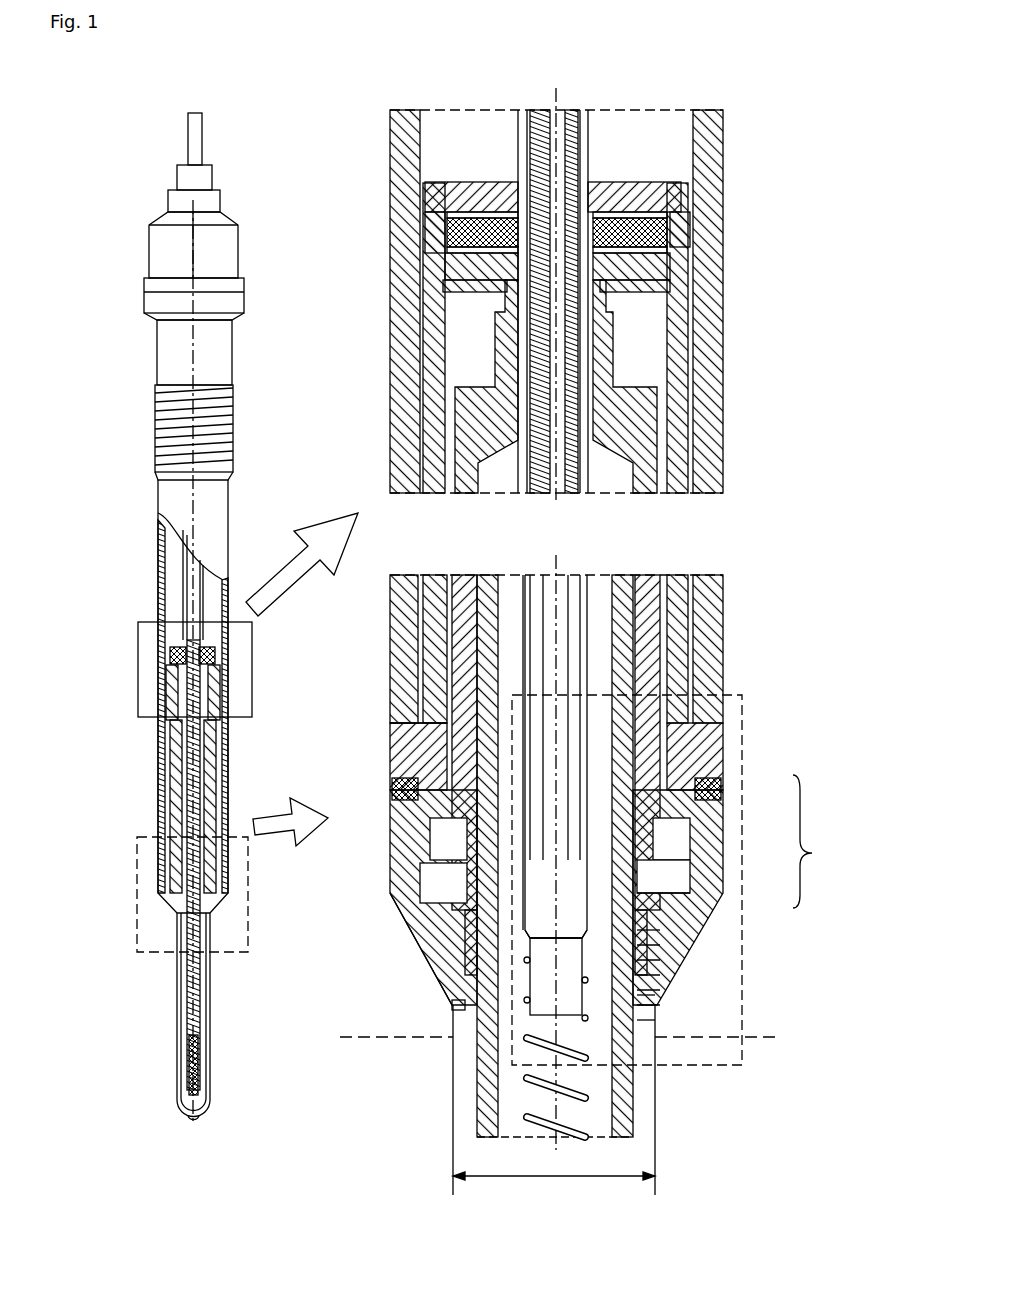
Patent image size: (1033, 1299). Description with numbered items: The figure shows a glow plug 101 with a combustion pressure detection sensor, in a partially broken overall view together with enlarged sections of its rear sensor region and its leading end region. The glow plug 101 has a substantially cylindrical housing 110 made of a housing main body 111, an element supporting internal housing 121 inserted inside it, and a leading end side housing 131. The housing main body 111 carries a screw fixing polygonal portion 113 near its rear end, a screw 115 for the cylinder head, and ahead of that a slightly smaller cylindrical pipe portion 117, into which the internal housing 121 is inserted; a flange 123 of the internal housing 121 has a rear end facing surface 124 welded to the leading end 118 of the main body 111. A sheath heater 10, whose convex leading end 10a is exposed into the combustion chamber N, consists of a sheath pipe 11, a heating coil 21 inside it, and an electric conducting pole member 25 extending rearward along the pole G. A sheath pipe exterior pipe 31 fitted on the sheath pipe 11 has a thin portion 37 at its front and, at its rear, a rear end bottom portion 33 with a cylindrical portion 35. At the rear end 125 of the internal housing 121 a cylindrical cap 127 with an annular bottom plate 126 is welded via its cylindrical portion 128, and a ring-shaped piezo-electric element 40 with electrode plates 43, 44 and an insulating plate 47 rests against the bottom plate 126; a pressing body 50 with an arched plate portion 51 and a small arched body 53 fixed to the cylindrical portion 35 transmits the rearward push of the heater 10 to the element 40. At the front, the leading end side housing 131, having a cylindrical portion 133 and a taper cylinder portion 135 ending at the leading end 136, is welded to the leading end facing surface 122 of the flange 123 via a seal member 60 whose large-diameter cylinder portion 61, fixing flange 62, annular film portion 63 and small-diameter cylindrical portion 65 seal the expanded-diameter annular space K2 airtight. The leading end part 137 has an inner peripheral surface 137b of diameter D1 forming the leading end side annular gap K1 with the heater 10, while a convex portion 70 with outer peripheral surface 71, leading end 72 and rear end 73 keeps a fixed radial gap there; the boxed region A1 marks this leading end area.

The sheath heater 10 is at (176, 1015).
The leading end of sheath heater 10a is at (196, 1120).
The sheath pipe 11 is at (205, 996).
The heating coil 21 is at (208, 1078).
The electric conducting pole member 25 is at (182, 578).
The sheath pipe exterior pipe 31 is at (700, 478).
The rear end bottom portion 33 is at (640, 385).
The cylindrical portion 35 is at (497, 352).
The thin portion 37 is at (400, 838).
The piezo-electric element 40 is at (168, 650).
The electrode plate 43 is at (445, 250).
The electrode plate 44 is at (445, 210).
The insulating plate 47 is at (675, 205).
The pressing body 50 is at (447, 270).
The arched plate portion 51 is at (476, 295).
The small arched body 53 is at (615, 305).
The seal member 60 is at (819, 841).
The large-diameter cylinder portion 61 is at (710, 835).
The fixing flange 62 is at (715, 790).
The annular film portion 63 is at (690, 870).
The small-diameter cylindrical portion 65 is at (672, 893).
The convex portion 70 is at (643, 945).
The outer peripheral surface of convex portion 71 is at (655, 995).
The leading end of convex portion 72 is at (652, 1020).
The rear end of convex portion 73 is at (655, 915).
The glow plug 101 is at (146, 361).
The housing 110 is at (156, 499).
The housing main body 111 is at (160, 772).
The screw fixing polygonal portion 113 is at (160, 252).
The screw 115 is at (155, 412).
The cylindrical pipe portion 117 is at (162, 738).
The leading end of housing main body 118 is at (392, 740).
The element supporting internal housing 121 is at (167, 676).
The leading end facing surface 122 is at (393, 792).
The flange 123 is at (725, 740).
The rear end facing surface 124 is at (395, 700).
The rear end of element supporting internal housing 125 is at (688, 300).
The annular bottom plate 126 is at (468, 183).
The cylindrical cap 127 is at (632, 182).
The cylindrical portion of cap 128 is at (683, 237).
The leading end side housing 131 is at (166, 905).
The cylindrical portion of leading end side housing 133 is at (410, 870).
The taper cylinder portion 135 is at (420, 968).
The leading end of housing 136 is at (175, 940).
The leading end part 137 is at (640, 950).
The inner peripheral surface of leading end part 137b is at (635, 930).
The pole G is at (200, 350).
The leading end side annular gap K1 is at (655, 975).
The expanded-diameter annular space K2 is at (398, 905).
The region A1 is at (742, 972).
The diameter of inner peripheral surface D1 is at (554, 1100).
The combustion chamber N is at (375, 1040).